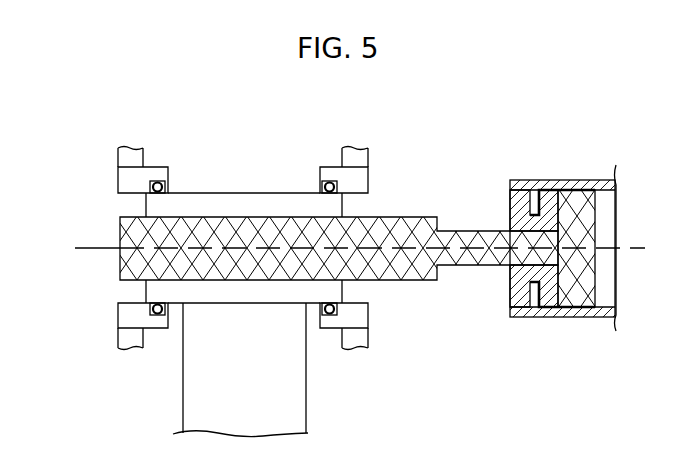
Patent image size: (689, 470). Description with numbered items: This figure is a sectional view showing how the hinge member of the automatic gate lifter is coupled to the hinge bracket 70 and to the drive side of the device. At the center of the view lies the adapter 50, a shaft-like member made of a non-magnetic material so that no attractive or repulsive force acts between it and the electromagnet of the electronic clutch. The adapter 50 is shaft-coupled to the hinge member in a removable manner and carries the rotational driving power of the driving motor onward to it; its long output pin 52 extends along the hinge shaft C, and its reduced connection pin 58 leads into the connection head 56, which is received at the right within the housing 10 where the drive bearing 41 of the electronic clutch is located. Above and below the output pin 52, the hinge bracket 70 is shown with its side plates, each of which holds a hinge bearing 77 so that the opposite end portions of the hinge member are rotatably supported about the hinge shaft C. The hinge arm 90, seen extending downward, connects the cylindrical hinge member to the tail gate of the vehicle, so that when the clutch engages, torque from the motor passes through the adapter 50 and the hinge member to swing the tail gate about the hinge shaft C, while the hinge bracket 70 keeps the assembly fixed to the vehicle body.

The housing 10 is at (573, 163).
The drive bearing 41 is at (520, 190).
The adapter 50 is at (418, 286).
The output pin 52 is at (246, 232).
The connection head 56 is at (578, 293).
The connection pin 58 is at (466, 229).
The hinge bracket 70 is at (112, 172).
The hinge bearing 77 is at (162, 315).
The hinge arm 90 is at (298, 405).
The hinge shaft C is at (351, 250).